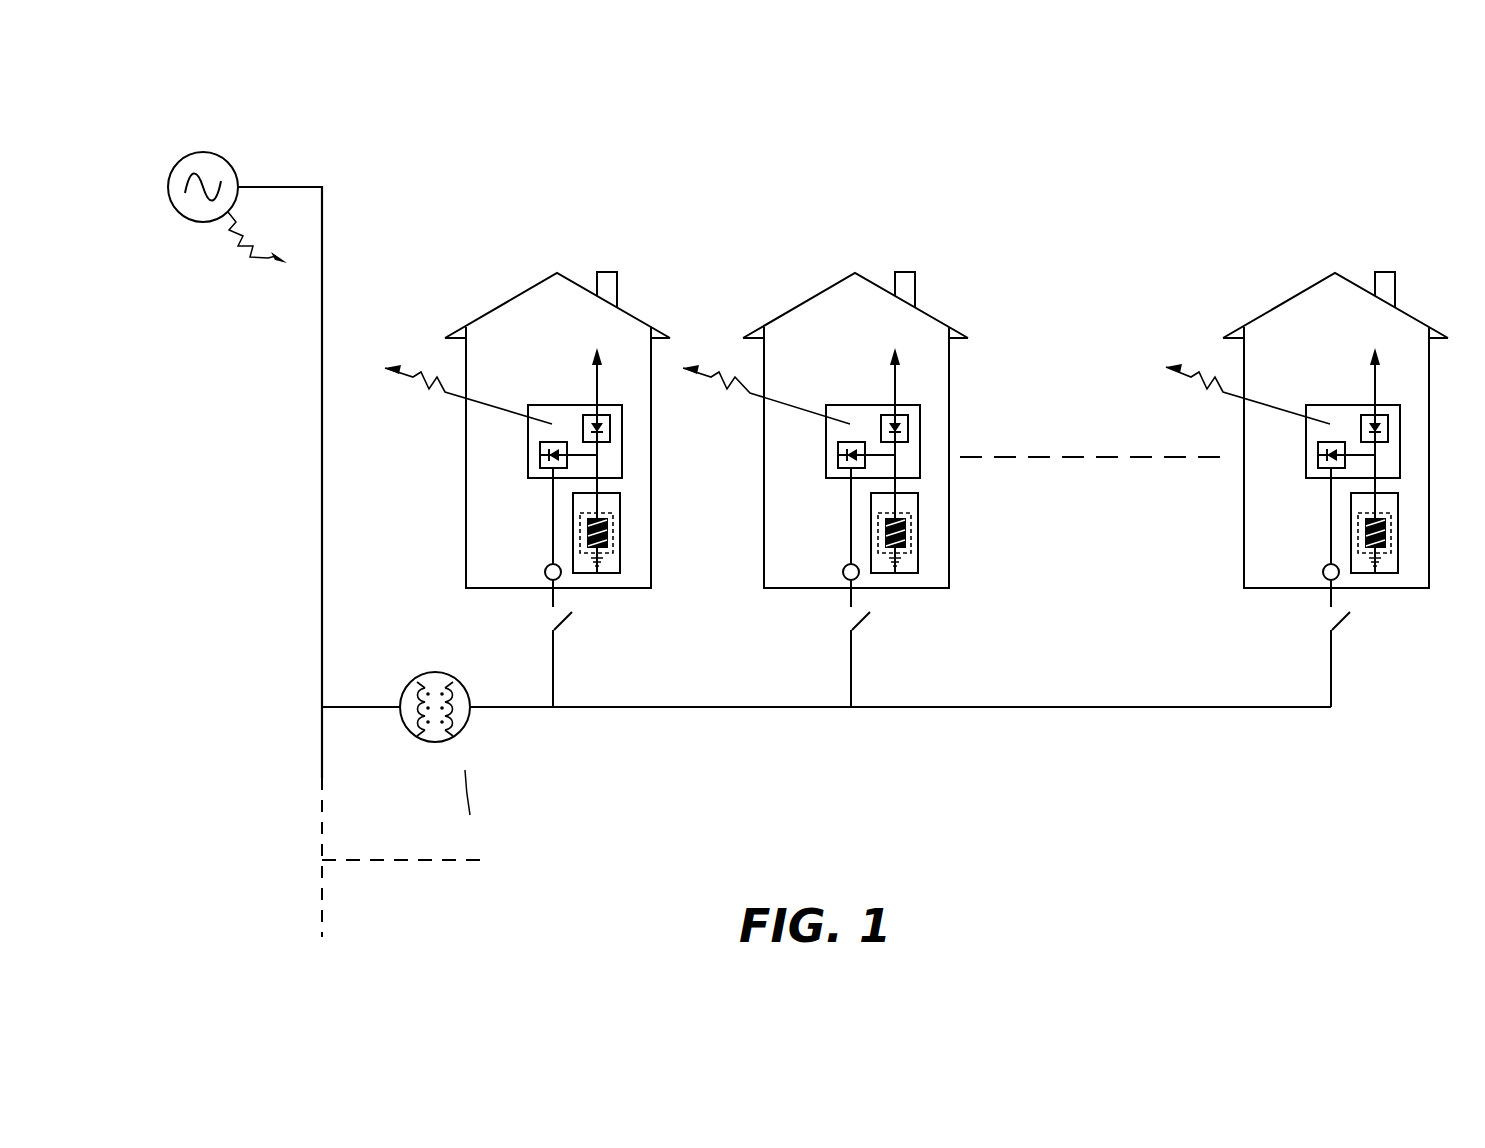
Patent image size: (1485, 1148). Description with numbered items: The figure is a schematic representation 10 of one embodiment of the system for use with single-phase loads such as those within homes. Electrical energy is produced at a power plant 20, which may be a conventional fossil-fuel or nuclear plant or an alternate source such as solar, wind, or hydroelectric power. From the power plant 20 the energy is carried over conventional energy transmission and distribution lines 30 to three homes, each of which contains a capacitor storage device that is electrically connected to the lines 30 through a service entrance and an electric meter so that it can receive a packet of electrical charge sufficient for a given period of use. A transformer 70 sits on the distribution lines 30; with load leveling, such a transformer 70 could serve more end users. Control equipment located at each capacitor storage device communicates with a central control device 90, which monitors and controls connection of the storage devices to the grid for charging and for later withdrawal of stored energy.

The schematic representation 10 is at (1084, 188).
The power plant 20 is at (232, 167).
The energy transmission and distribution lines 30 is at (320, 473).
The transformer 70 is at (457, 733).
The central control device 90 is at (273, 252).